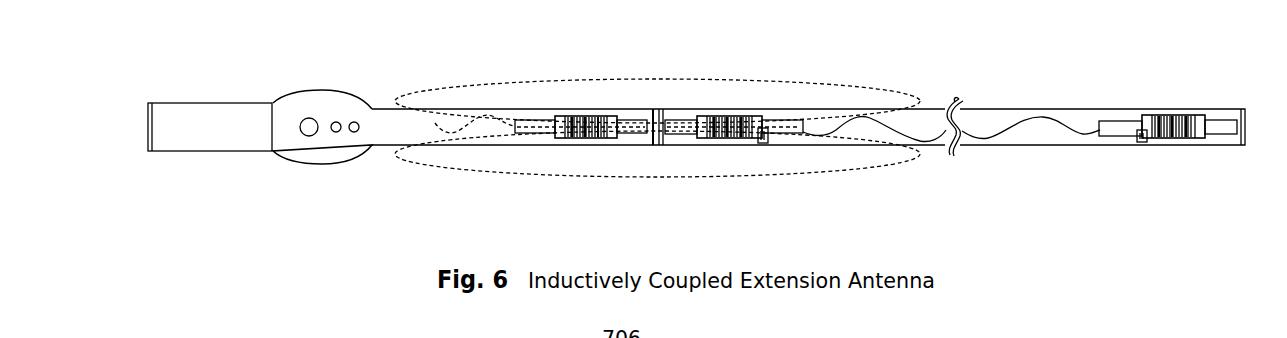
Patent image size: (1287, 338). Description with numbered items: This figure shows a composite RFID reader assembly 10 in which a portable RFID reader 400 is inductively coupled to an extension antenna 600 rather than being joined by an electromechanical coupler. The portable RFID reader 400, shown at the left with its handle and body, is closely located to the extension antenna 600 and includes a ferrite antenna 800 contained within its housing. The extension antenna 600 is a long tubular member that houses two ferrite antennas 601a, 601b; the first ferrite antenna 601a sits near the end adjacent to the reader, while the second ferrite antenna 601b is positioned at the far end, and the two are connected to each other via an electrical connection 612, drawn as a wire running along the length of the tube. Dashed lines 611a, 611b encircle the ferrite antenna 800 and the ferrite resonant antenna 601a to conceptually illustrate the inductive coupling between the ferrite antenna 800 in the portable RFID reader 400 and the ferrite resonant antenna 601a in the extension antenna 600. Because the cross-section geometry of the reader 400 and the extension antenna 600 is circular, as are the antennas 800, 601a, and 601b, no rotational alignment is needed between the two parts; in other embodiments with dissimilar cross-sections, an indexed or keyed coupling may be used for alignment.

The composite RFID reader assembly 10 is at (1098, 180).
The portable RFID reader 400 is at (363, 160).
The extension antenna 600 is at (973, 153).
The ferrite antenna 601a is at (735, 113).
The ferrite antenna 601b is at (1178, 112).
The dashed line 611a is at (512, 78).
The dashed line 611b is at (580, 180).
The electrical connection 612 is at (1017, 115).
The ferrite antenna 800 is at (580, 113).